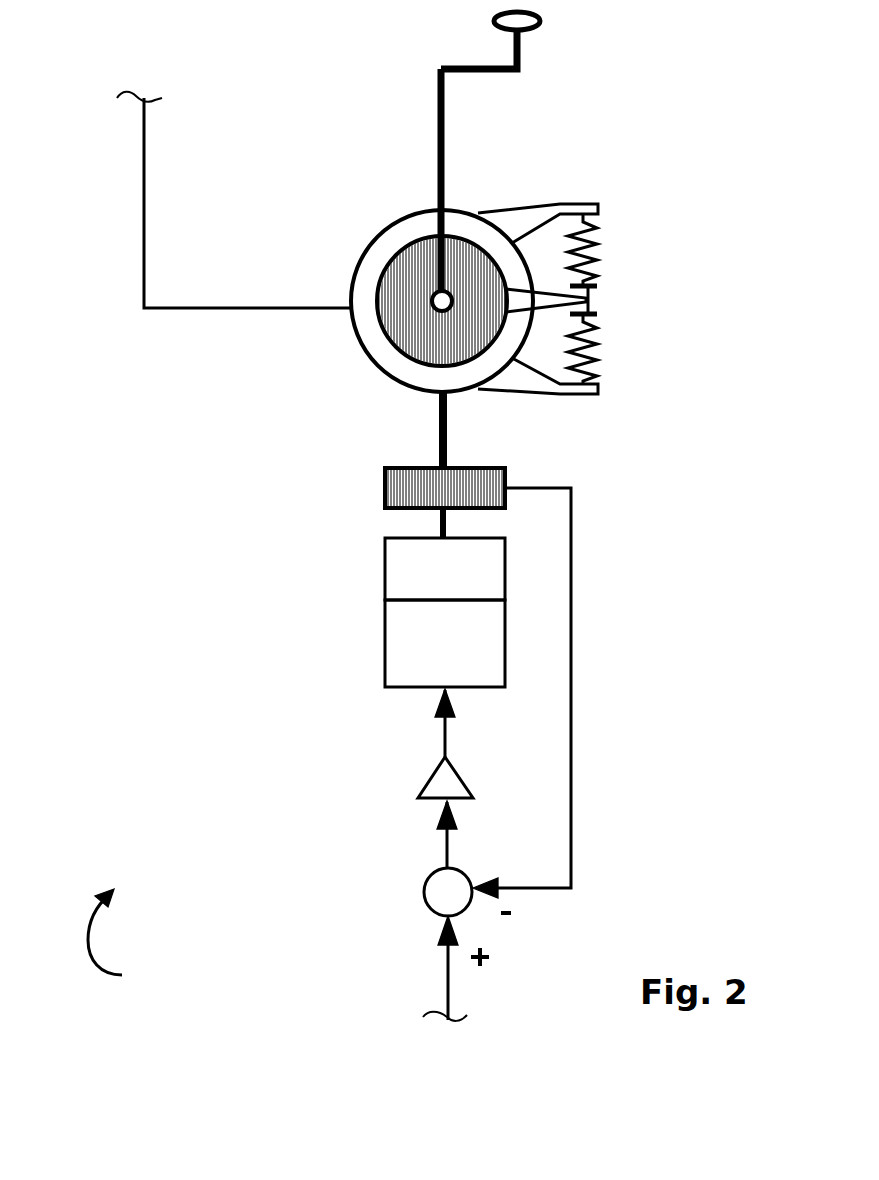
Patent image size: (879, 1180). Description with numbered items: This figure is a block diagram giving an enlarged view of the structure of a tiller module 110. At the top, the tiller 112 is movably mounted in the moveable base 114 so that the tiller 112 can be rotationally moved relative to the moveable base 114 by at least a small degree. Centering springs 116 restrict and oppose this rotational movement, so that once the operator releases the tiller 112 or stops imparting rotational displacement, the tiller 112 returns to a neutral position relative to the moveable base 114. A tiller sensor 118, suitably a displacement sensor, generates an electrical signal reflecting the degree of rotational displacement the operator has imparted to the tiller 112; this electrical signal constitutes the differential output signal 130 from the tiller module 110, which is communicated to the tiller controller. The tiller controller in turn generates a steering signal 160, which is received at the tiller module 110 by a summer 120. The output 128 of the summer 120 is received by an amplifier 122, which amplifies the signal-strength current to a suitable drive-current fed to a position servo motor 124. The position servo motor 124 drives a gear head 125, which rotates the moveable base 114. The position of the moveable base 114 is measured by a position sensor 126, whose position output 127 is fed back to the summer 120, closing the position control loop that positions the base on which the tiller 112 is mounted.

The tiller module 110 is at (130, 940).
The tiller 112 is at (494, 22).
The moveable base 114 is at (396, 241).
The centering springs 116 is at (597, 245).
The tiller sensor 118 is at (391, 212).
The summer 120 is at (466, 872).
The amplifier 122 is at (468, 787).
The position servo motor 124 is at (505, 657).
The gear head 125 is at (505, 580).
The position sensor 126 is at (505, 479).
The position output 127 is at (572, 740).
The output of the summer 128 is at (445, 845).
The differential output signal 130 is at (144, 163).
The steering signal 160 is at (448, 978).